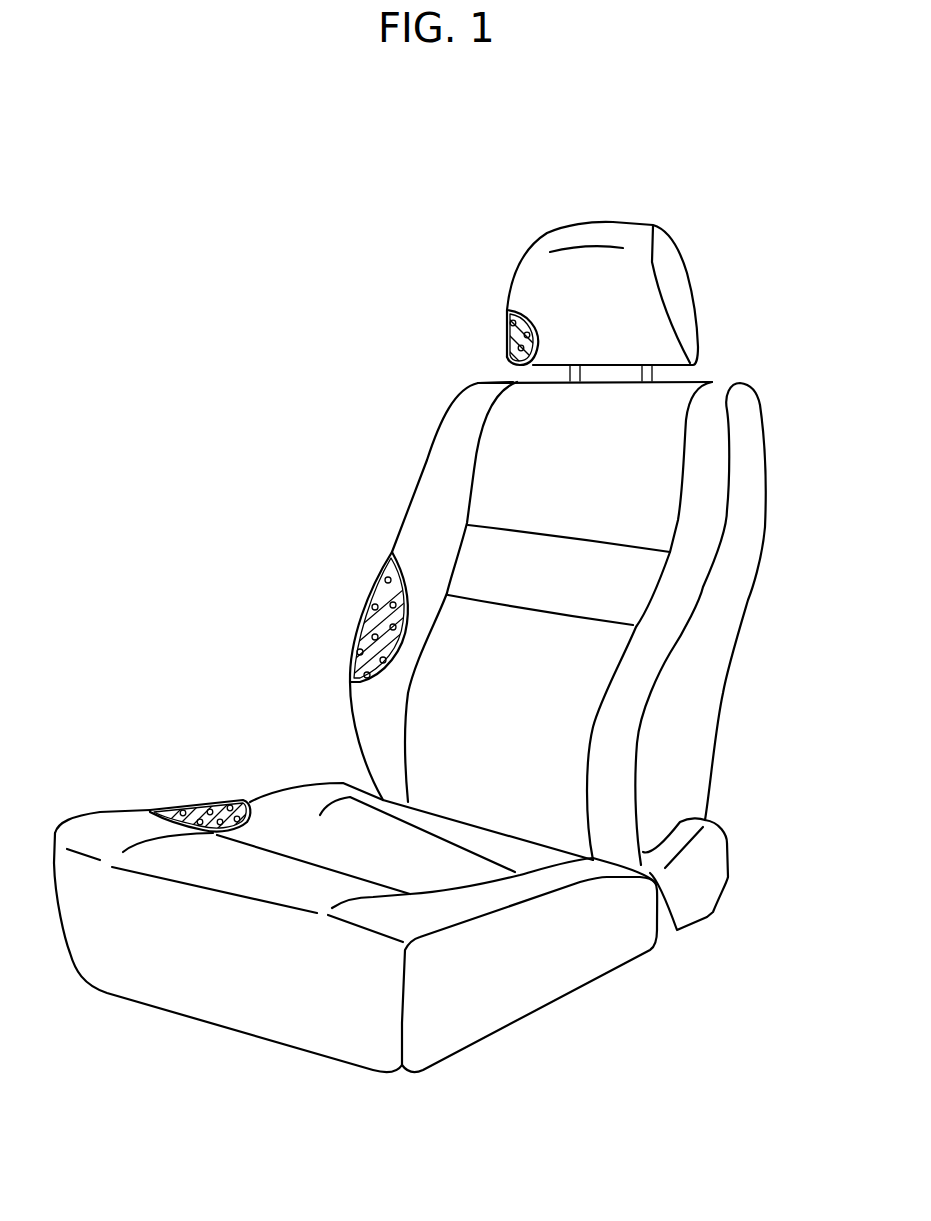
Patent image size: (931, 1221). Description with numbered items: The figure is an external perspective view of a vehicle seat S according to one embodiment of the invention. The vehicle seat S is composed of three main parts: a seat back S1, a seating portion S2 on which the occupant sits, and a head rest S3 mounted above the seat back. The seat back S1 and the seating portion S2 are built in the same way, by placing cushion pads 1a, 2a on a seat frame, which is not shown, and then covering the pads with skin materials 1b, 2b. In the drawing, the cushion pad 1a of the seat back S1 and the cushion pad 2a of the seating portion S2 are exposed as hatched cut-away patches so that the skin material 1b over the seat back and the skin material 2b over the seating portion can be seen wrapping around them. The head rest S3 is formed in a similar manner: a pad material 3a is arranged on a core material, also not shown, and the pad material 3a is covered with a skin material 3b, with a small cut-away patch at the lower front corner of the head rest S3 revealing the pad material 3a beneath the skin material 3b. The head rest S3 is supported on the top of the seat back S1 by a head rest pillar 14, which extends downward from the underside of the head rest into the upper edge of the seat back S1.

The vehicle seat S is at (243, 138).
The seat back S1 is at (390, 473).
The seating portion S2 is at (252, 745).
The head rest S3 is at (507, 243).
The head rest pillar 14 is at (645, 377).
The cushion pad 1a is at (368, 616).
The skin material 1b is at (392, 552).
The cushion pad 2a is at (197, 808).
The skin material 2b is at (240, 800).
The pad material 3a is at (507, 336).
The skin material 3b is at (507, 311).